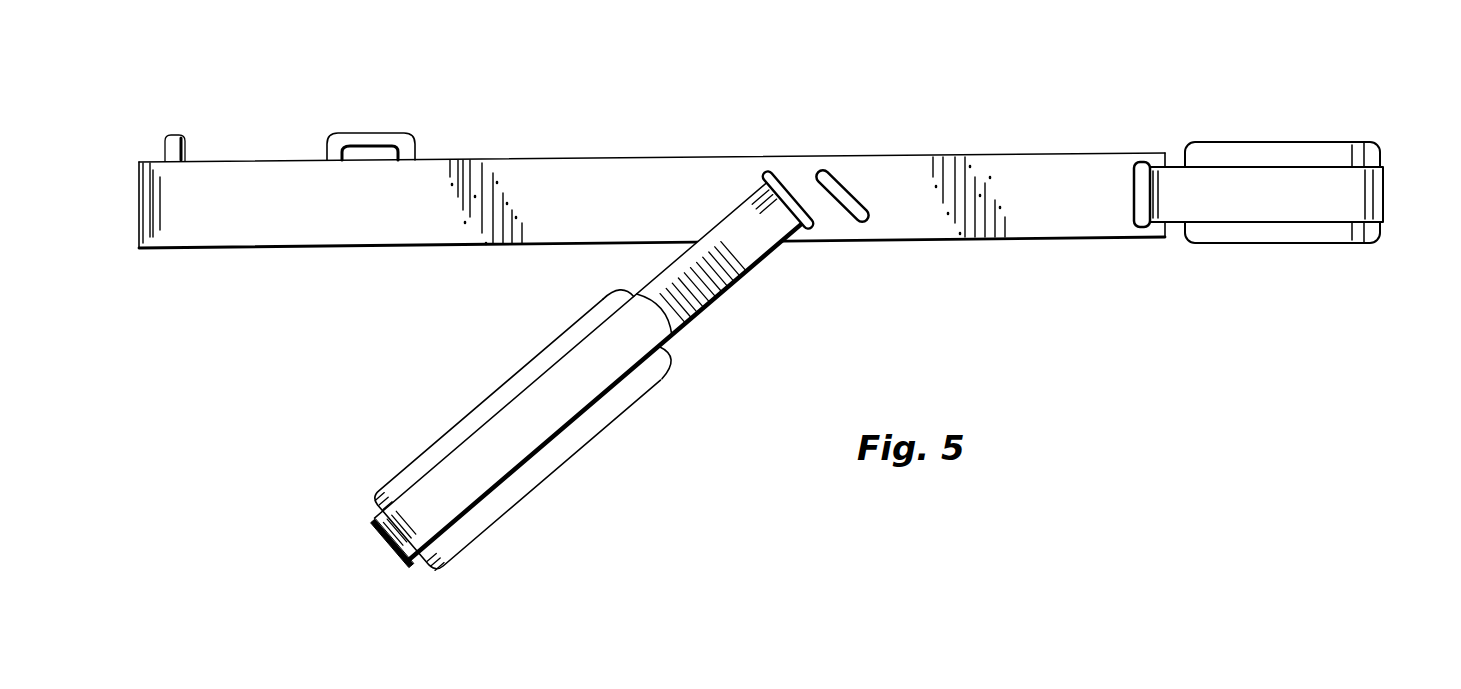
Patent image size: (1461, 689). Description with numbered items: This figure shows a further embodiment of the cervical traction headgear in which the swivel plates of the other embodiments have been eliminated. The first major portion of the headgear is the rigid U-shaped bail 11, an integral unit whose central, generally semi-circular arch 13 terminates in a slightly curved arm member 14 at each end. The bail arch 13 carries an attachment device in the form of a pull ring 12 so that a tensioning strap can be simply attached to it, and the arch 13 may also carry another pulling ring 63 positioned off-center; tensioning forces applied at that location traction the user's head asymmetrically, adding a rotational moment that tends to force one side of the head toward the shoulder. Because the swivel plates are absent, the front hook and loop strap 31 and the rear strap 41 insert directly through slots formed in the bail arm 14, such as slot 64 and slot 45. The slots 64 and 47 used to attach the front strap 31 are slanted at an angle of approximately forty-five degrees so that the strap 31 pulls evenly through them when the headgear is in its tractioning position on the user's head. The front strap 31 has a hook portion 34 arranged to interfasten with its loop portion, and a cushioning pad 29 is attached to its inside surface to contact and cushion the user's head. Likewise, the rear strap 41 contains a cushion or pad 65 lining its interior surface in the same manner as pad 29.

The U-shaped bail 11 is at (447, 124).
The pull ring 12 is at (169, 132).
The central arch 13 is at (192, 230).
The arm member 14 is at (943, 225).
The pad 29 is at (515, 498).
The hook and loop strap 31 is at (573, 392).
The hook portion 34 is at (693, 310).
The rear strap 41 is at (1220, 185).
The slot 45 is at (1133, 208).
The slot 47 is at (847, 187).
The pulling ring 63 is at (356, 136).
The slot 64 is at (788, 184).
The pad 65 is at (1330, 237).